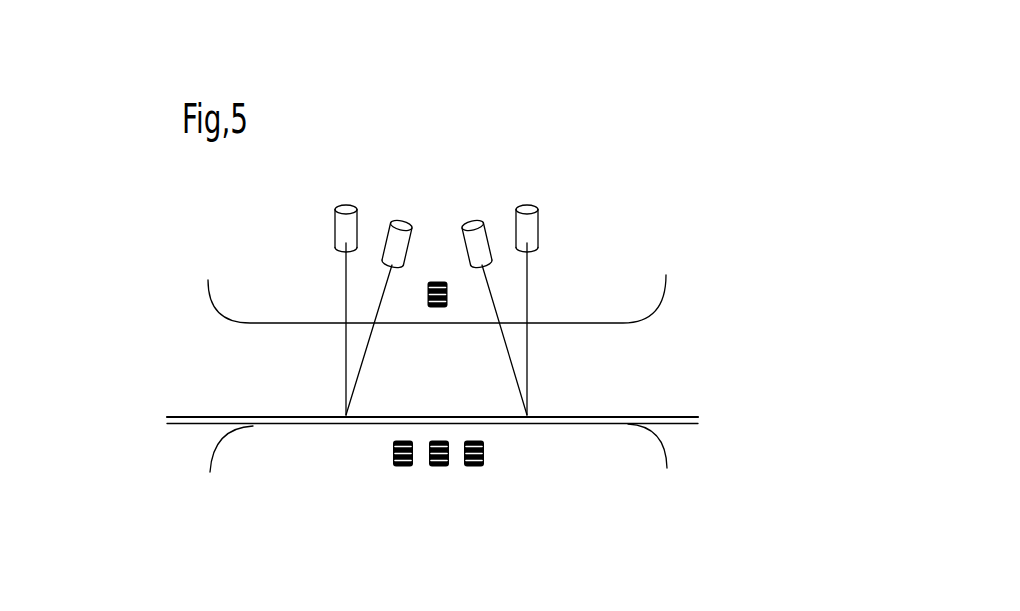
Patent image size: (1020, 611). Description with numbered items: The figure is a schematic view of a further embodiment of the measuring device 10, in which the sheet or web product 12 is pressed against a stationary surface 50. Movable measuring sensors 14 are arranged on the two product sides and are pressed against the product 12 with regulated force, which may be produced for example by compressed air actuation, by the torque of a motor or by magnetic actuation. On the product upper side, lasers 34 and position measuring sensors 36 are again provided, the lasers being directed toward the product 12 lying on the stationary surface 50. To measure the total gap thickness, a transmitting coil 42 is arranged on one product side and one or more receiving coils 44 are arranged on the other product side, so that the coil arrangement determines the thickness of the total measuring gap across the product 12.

The measuring device 10 is at (590, 155).
The sheet or web product 12 is at (703, 418).
The measuring sensors 14 is at (200, 300).
The lasers 34 is at (350, 203).
The position measuring sensors 36 is at (405, 218).
The transmitting coil 42 is at (436, 282).
The receiving coils 44 is at (440, 472).
The stationary surface 50 is at (612, 414).